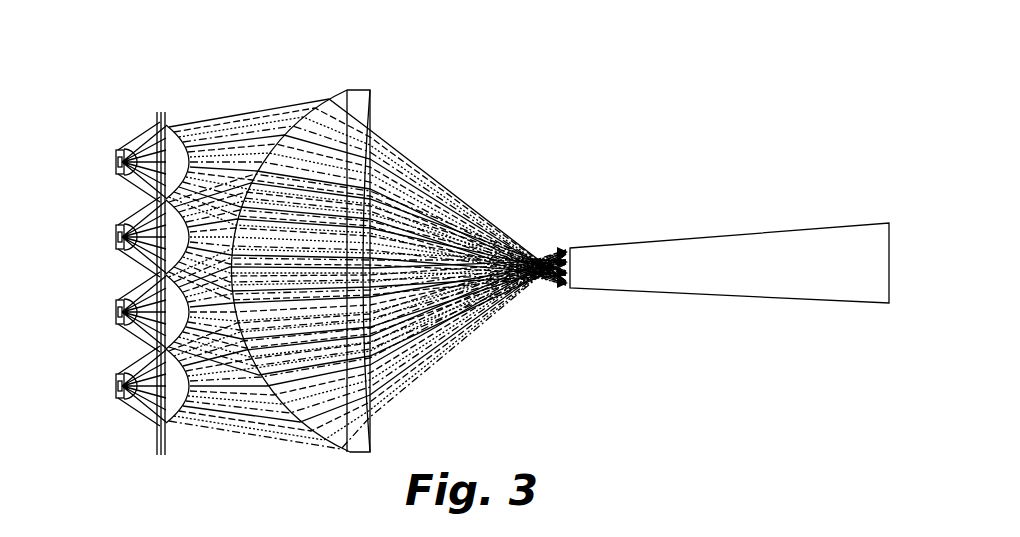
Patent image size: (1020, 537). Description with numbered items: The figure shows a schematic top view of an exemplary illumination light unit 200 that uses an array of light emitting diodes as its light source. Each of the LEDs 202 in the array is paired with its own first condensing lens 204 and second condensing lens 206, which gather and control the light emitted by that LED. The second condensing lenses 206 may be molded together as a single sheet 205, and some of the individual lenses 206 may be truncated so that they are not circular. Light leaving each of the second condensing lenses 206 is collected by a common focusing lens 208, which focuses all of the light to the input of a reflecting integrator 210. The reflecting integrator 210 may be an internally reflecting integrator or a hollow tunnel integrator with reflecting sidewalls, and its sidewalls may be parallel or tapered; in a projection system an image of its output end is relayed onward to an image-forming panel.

The illumination light unit 200 is at (553, 95).
The LEDs 202 is at (117, 312).
The first condensing lens 204 is at (124, 394).
The single sheet 205 is at (162, 101).
The second condensing lens 206 is at (166, 444).
The common focusing lens 208 is at (346, 452).
The reflecting integrator 210 is at (772, 232).